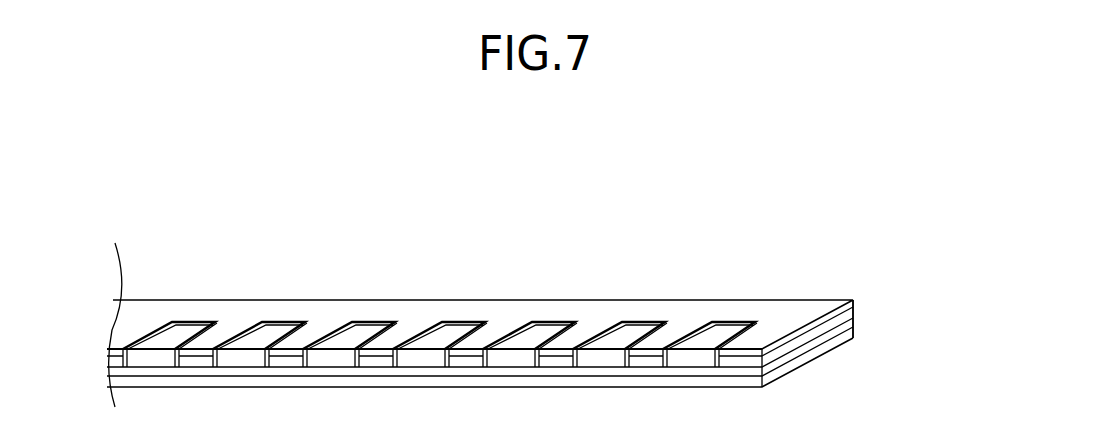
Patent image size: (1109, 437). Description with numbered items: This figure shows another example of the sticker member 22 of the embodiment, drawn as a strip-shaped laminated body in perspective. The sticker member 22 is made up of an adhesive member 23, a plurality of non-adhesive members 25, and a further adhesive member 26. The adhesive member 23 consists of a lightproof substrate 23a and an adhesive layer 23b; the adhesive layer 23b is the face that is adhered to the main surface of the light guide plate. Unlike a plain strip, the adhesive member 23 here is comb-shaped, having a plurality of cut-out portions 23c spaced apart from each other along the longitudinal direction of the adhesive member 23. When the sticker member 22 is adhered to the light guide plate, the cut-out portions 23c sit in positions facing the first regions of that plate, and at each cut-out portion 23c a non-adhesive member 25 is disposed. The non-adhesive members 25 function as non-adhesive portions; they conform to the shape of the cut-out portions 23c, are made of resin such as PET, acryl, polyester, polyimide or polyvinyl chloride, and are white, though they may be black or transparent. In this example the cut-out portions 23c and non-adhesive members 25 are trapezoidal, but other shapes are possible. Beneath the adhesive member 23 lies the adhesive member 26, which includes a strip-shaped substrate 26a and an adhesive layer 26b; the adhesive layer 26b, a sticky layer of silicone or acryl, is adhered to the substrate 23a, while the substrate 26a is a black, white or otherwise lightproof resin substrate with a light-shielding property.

The sticker member 22 is at (828, 167).
The adhesive member 23 is at (938, 240).
The lightproof substrate 23a is at (853, 312).
The adhesive layer 23b is at (853, 303).
The cut-out portions 23c is at (186, 335).
The non-adhesive members 25 is at (177, 336).
The adhesive member 26 is at (938, 325).
The strip-shaped substrate 26a is at (853, 334).
The adhesive layer 26b is at (853, 324).